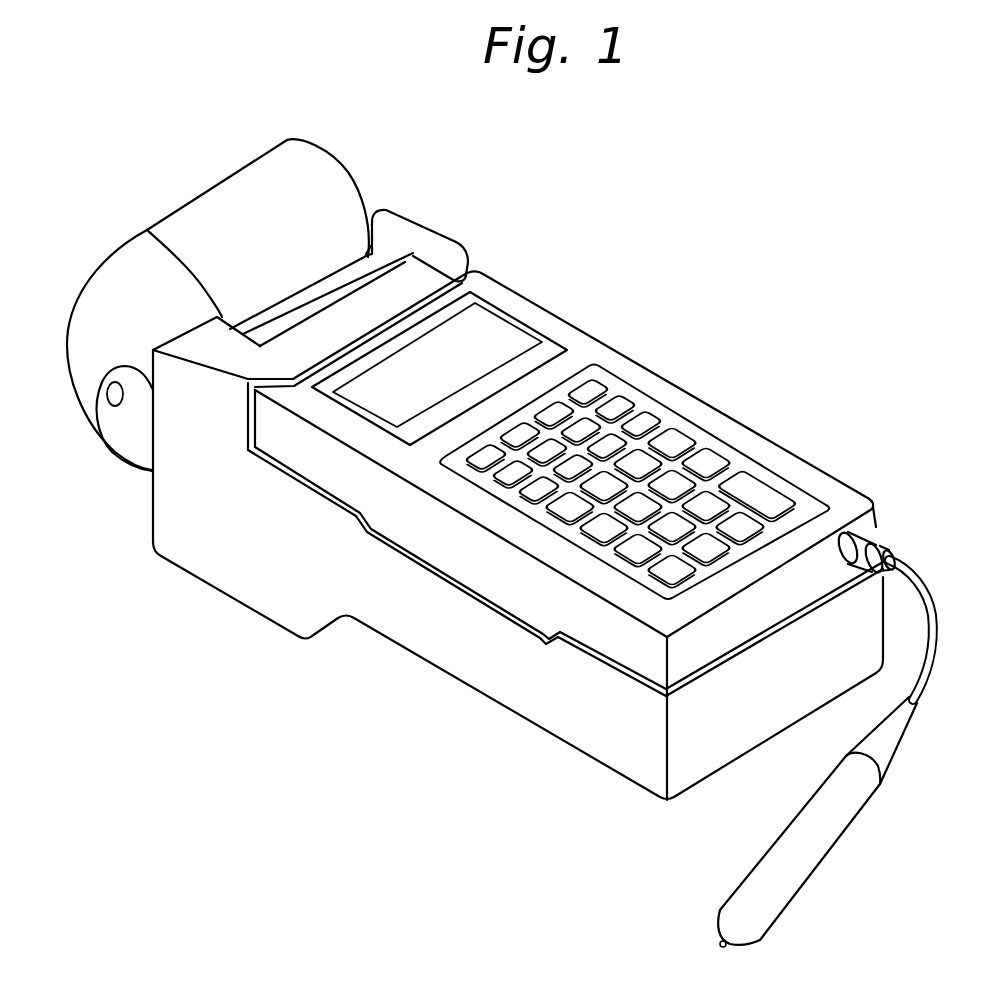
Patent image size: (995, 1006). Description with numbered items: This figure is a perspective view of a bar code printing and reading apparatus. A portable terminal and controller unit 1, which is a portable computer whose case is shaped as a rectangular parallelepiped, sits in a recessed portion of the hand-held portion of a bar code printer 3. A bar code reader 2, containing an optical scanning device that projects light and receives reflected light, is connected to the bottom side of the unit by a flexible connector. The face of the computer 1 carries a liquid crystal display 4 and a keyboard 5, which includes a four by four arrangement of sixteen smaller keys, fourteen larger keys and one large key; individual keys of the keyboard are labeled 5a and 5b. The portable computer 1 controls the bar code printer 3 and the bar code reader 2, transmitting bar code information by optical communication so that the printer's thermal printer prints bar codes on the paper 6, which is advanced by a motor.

The portable terminal and controller unit 1 is at (712, 396).
The bar code reader 2 is at (796, 903).
The bar code printer 3 is at (223, 603).
The liquid crystal display 4 is at (493, 320).
The keyboard 5 is at (653, 402).
The key 5a is at (588, 372).
The key 5b is at (540, 402).
The paper 6 is at (287, 140).